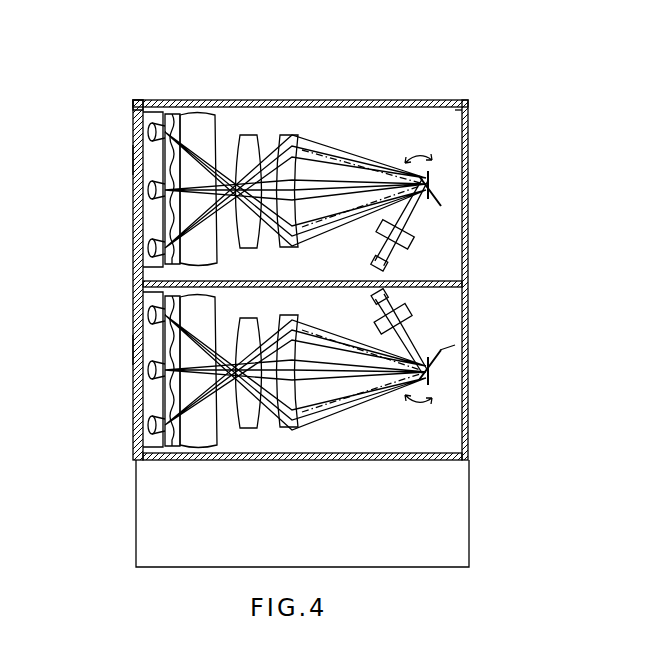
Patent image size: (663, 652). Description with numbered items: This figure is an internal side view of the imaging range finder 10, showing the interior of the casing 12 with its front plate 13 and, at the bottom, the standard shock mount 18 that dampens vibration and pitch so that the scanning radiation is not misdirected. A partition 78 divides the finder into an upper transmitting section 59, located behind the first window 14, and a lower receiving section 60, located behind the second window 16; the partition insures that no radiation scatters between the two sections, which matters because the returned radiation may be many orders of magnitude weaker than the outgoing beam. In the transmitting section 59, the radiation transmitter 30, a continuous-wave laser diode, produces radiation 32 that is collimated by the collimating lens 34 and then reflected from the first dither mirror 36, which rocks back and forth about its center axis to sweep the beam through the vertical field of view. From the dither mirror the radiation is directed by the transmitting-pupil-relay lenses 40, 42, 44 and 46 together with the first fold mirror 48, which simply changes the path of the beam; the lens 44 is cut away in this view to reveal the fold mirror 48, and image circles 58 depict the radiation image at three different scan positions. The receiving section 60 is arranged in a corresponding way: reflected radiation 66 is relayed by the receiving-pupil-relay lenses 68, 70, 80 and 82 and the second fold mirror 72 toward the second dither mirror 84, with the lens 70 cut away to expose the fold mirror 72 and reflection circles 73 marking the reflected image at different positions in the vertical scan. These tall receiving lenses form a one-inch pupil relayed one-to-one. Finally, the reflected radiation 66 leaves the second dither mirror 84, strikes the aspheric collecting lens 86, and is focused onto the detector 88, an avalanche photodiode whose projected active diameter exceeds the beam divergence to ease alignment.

The imaging range finder 10 is at (415, 66).
The casing 12 is at (250, 100).
The front plate 13 is at (134, 102).
The first window 14 is at (131, 157).
The second window 16 is at (131, 345).
The shock mount 18 is at (468, 528).
The radiation transmitter 30 is at (372, 266).
The radiation 32 is at (363, 167).
The collimating lens 34 is at (410, 250).
The first dither mirror 36 is at (431, 180).
The transmitting-pupil-relay lens 40 is at (287, 146).
The transmitting-pupil-relay lens 42 is at (249, 145).
The transmitting-pupil-relay lens 44 is at (168, 112).
The transmitting-pupil-relay lens 46 is at (200, 118).
The first fold mirror 48 is at (152, 222).
The image circles 58 is at (148, 134).
The transmitting section 59 is at (447, 134).
The receiving section 60 is at (450, 353).
The reflected radiation 66 is at (317, 340).
The receiving-pupil-relay lens 68 is at (200, 455).
The receiving-pupil-relay lens 70 is at (171, 455).
The second fold mirror 72 is at (152, 400).
The reflection circles 73 is at (149, 311).
The partition 78 is at (461, 283).
The receiving-pupil-relay lens 80 is at (265, 420).
The receiving-pupil-relay lens 82 is at (290, 416).
The second dither mirror 84 is at (432, 388).
The collecting lens 86 is at (412, 312).
The detector 88 is at (375, 300).